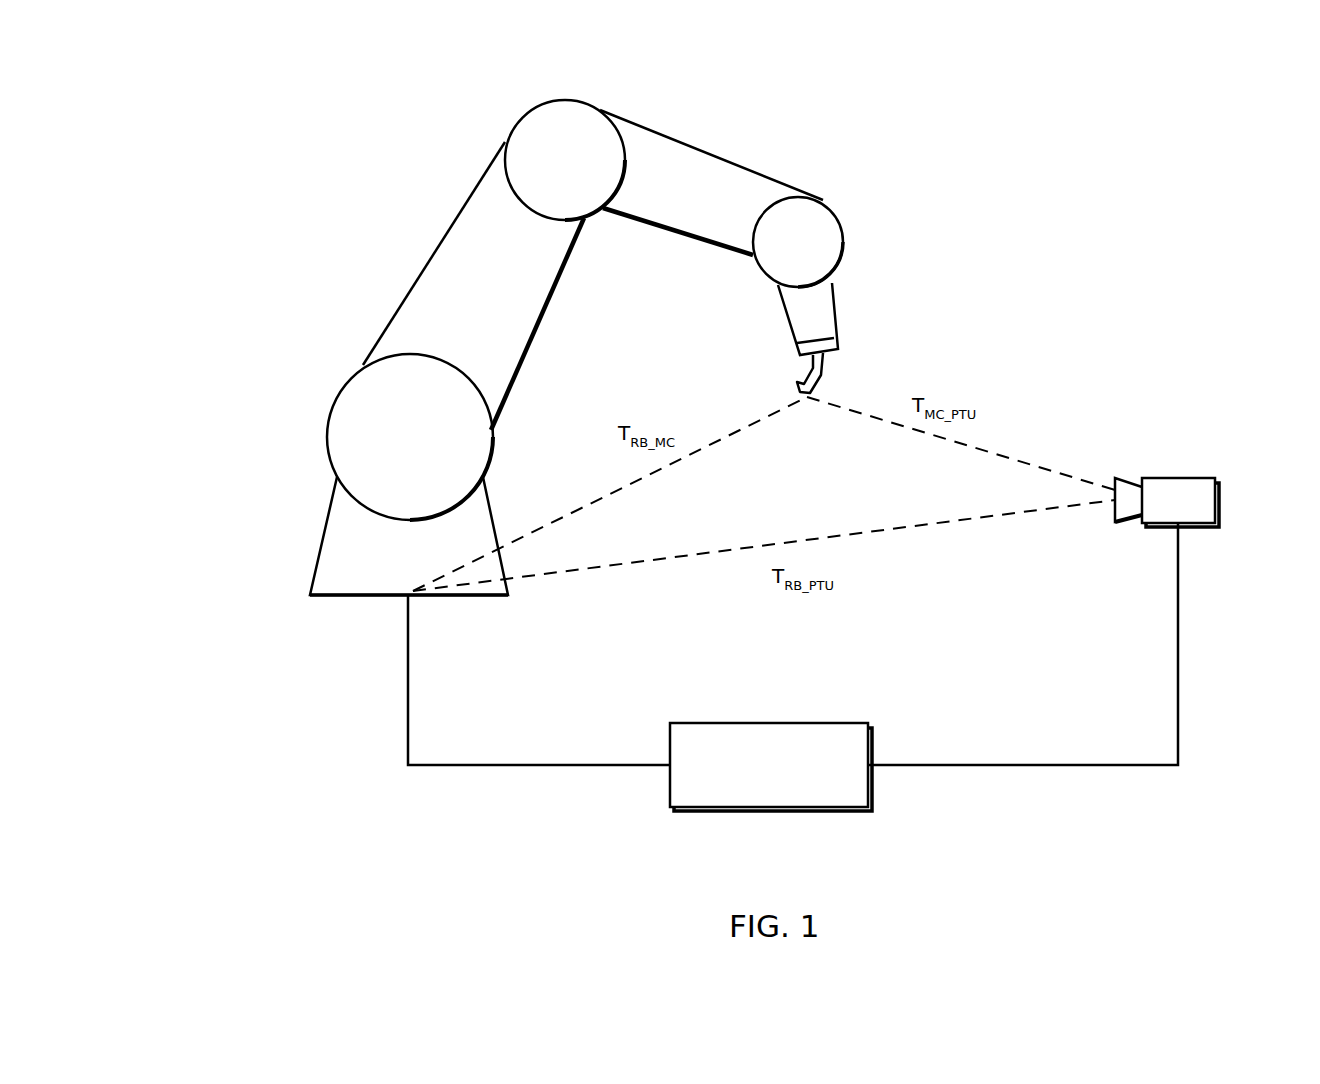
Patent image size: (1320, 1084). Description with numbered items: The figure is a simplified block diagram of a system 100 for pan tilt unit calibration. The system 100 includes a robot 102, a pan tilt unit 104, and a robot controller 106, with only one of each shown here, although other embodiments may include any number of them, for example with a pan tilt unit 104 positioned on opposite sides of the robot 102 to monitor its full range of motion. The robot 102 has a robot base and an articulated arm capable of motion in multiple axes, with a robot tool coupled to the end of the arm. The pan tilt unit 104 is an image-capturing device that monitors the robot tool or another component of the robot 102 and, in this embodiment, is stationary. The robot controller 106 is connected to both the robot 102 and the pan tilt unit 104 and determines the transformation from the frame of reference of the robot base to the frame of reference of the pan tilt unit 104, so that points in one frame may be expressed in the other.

The system 100 is at (170, 137).
The robot 102 is at (567, 99).
The pan tilt unit 104 is at (1180, 477).
The robot controller 106 is at (772, 722).